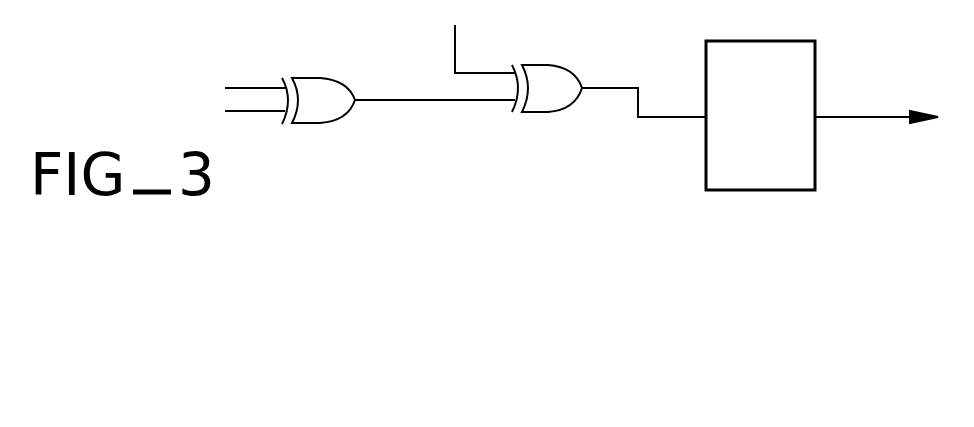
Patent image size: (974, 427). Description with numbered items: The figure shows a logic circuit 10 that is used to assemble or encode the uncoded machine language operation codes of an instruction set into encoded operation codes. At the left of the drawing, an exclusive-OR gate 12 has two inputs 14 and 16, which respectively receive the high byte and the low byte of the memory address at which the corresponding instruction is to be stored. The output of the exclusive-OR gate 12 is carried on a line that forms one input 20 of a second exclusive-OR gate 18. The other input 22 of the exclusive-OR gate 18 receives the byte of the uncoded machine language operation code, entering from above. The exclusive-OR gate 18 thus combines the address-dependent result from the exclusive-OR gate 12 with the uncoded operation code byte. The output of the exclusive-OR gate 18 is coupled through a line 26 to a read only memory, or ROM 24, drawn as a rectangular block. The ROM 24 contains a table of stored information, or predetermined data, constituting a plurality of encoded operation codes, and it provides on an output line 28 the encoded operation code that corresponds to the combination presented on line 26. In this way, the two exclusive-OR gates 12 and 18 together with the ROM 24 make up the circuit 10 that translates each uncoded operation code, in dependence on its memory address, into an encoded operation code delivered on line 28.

The circuit 10 is at (606, 52).
The exclusive-OR gate 12 is at (322, 77).
The input 14 is at (249, 87).
The input 16 is at (253, 113).
The exclusive-OR gate 18 is at (547, 112).
The input 20 is at (410, 100).
The input 22 is at (456, 44).
The read only memory 24 is at (817, 60).
The line 26 is at (635, 105).
The line 28 is at (872, 118).